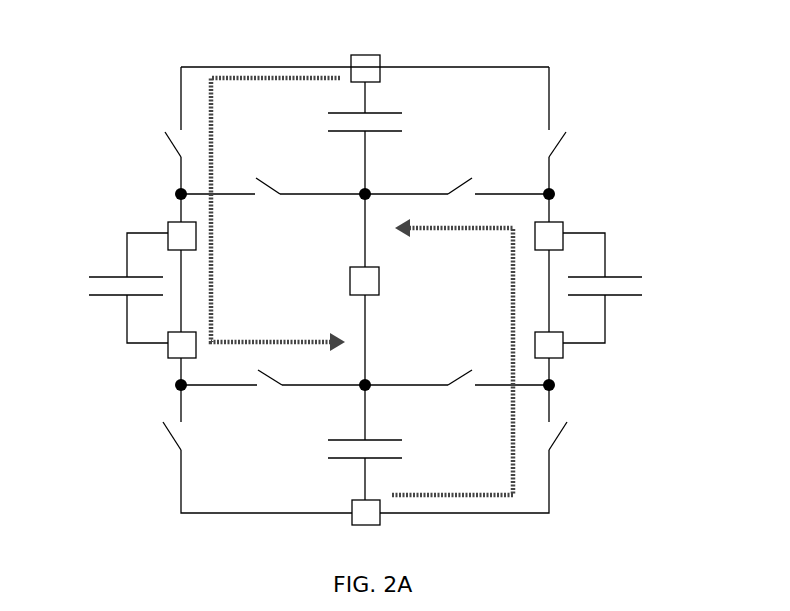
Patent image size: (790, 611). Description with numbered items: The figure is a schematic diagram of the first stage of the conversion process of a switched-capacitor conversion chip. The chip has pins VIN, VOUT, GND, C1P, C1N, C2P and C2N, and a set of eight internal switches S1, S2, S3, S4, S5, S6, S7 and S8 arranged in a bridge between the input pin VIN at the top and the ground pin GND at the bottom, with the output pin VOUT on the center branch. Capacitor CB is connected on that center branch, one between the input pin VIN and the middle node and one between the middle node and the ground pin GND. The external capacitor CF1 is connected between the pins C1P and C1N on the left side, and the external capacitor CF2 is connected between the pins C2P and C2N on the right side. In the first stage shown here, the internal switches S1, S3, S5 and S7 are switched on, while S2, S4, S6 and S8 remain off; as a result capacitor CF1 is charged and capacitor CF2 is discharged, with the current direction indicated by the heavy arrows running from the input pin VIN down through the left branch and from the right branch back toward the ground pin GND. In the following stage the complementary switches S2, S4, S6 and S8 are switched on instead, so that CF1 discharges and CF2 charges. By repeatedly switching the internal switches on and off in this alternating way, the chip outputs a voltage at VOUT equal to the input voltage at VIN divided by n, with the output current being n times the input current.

The internal switch S1 is at (172, 144).
The internal switch S2 is at (557, 144).
The internal switch S3 is at (266, 378).
The internal switch S4 is at (457, 378).
The internal switch S5 is at (457, 188).
The internal switch S6 is at (267, 188).
The internal switch S7 is at (556, 439).
The internal switch S8 is at (171, 436).
The input voltage pin VIN is at (365, 61).
The output voltage pin VOUT is at (383, 281).
The ground pin GND is at (366, 521).
The capacitor CB is at (365, 278).
The capacitor CF1 is at (128, 288).
The capacitor CF2 is at (602, 288).
The pin C1P is at (181, 244).
The pin C1N is at (181, 338).
The pin C2P is at (549, 244).
The pin C2N is at (549, 338).